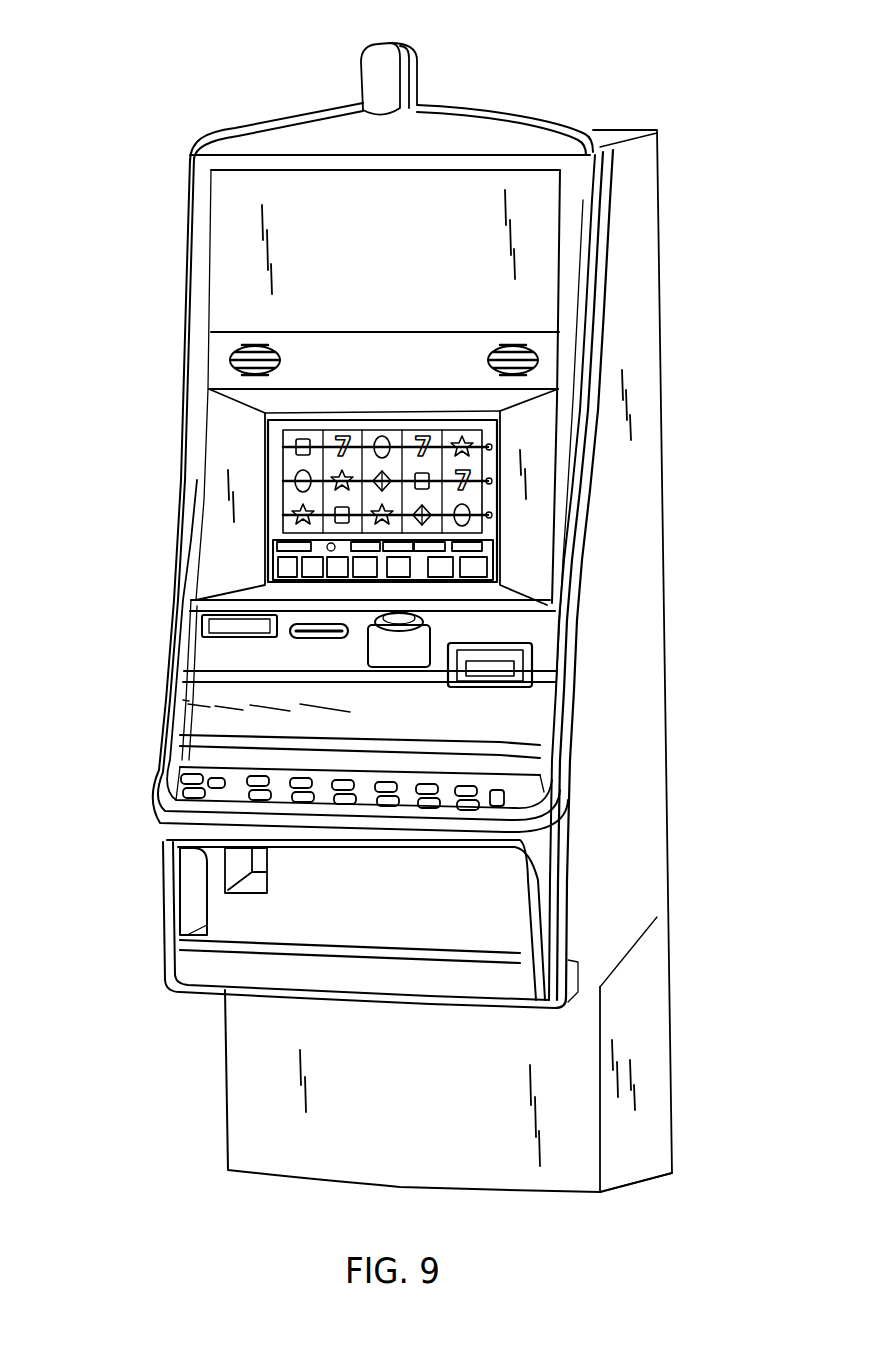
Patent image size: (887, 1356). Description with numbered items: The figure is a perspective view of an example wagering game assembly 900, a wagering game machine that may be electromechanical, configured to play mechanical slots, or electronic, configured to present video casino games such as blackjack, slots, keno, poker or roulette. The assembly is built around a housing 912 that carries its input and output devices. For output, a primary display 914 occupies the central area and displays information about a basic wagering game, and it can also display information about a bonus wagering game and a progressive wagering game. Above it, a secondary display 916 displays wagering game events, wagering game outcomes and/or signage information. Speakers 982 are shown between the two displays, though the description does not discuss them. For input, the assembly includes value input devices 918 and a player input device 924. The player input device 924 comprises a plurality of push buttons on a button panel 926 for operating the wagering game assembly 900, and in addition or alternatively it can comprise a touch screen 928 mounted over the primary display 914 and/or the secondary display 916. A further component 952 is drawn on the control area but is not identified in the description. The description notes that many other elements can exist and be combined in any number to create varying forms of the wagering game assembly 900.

The wagering game assembly 900 is at (106, 14).
The housing 912 is at (632, 175).
The secondary display 916 is at (265, 270).
The speakers 982 is at (398, 430).
The primary display 914 is at (265, 520).
The touch screen 928 is at (500, 572).
The value input devices 918 is at (430, 624).
The card reader 952 is at (298, 640).
The player input device 924 is at (510, 795).
The button panel 926 is at (243, 787).